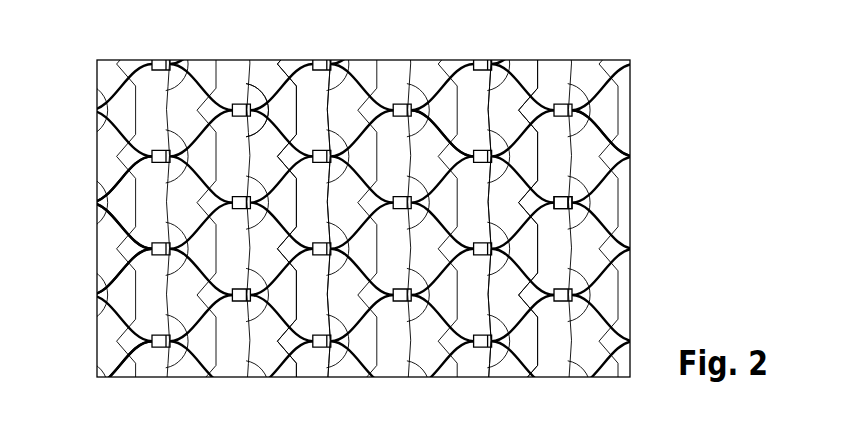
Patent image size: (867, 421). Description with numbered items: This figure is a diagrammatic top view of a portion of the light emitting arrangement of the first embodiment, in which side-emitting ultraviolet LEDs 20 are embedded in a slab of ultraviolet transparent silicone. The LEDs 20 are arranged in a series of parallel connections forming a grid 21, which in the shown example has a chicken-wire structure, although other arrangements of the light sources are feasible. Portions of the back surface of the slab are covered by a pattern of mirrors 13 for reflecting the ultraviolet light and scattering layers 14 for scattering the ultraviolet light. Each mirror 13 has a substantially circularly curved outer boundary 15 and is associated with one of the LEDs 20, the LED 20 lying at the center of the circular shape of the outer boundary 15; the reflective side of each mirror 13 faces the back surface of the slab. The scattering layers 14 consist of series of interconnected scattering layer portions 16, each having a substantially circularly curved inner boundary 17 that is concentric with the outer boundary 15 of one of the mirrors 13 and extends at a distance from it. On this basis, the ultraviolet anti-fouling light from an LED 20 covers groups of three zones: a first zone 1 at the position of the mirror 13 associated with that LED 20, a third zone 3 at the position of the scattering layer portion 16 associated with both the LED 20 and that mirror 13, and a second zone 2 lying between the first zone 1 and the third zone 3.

The first zone 1 is at (490, 143).
The second zone 2 is at (508, 127).
The third zone 3 is at (548, 150).
The mirror 13 is at (257, 97).
The scattering layer 14 is at (308, 110).
The outer boundary 15 is at (342, 130).
The scattering layer portion 16 is at (158, 213).
The inner boundary 17 is at (127, 337).
The side-emitting ultraviolet LED 20 is at (563, 205).
The grid 21 is at (612, 145).